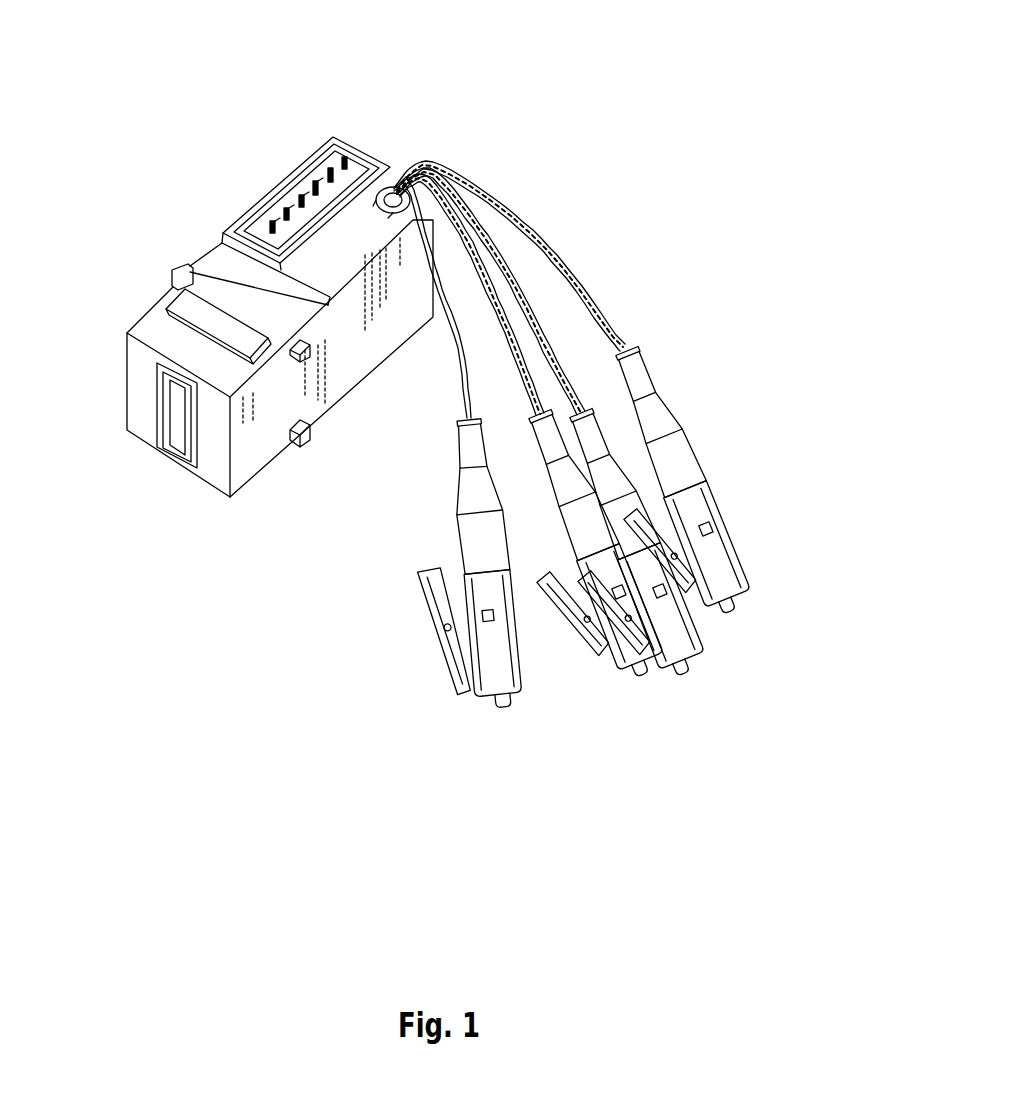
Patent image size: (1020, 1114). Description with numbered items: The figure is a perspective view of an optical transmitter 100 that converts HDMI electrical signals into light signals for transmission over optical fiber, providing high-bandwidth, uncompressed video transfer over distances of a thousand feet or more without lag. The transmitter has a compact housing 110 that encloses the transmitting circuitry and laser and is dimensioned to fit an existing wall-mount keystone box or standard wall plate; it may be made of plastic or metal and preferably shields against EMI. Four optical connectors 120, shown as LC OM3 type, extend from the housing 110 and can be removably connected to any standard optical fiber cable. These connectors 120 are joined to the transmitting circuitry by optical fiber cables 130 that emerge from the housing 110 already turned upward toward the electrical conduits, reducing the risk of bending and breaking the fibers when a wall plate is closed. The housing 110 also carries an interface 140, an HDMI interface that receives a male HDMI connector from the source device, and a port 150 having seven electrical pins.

The optical transmitter 100 is at (493, 43).
The housing 110 is at (147, 317).
The optical connectors 120 is at (663, 663).
The optical fiber cables 130 is at (540, 232).
The interface 140 is at (203, 460).
The port 150 is at (262, 212).